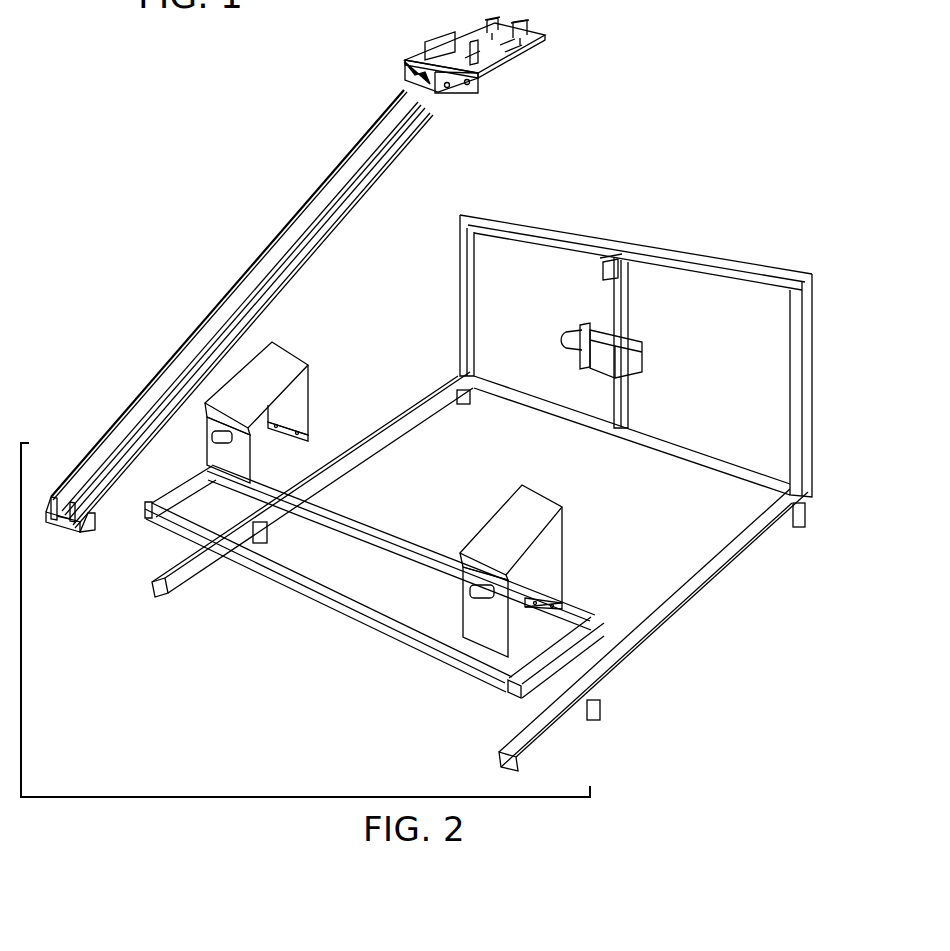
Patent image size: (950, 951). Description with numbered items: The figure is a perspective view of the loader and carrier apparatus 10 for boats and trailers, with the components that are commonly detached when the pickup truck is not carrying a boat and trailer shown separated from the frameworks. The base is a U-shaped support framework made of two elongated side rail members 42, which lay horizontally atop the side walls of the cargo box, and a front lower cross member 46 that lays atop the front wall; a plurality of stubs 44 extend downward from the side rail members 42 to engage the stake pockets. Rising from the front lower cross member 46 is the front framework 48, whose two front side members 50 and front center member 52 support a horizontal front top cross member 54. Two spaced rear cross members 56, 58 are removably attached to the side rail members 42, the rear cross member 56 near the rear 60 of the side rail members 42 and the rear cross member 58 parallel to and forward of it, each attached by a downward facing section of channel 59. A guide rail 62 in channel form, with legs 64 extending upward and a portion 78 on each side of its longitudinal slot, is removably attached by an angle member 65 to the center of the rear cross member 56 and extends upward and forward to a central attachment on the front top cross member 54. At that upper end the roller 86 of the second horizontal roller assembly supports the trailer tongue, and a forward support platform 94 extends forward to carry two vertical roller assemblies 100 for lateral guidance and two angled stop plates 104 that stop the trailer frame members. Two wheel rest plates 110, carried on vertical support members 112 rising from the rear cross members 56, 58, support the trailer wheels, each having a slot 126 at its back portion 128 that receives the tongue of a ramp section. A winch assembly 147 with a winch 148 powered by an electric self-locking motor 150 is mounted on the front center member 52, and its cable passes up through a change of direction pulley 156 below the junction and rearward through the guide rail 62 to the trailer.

The loader and carrier apparatus 10 is at (706, 633).
The side rail members 42 is at (415, 412).
The stubs 44 is at (470, 398).
The front lower cross member 46 is at (700, 452).
The front framework 48 is at (636, 356).
The front side members 50 is at (470, 312).
The front center member 52 is at (624, 405).
The front top cross member 54 is at (608, 243).
The rear cross member 56 is at (296, 582).
The rear cross member 58 is at (398, 530).
The section of channel 59 is at (195, 496).
The rear of side rail members 60 is at (185, 587).
The guide rail 62 is at (268, 248).
The legs 64 is at (298, 220).
The angle member 65 is at (93, 533).
The portion of guide rail 78 is at (125, 438).
The roller 86 is at (410, 78).
The forward support platform 94 is at (540, 43).
The vertical roller assemblies 100 is at (488, 18).
The angled stop plates 104 is at (435, 42).
The wheel rest plates 110 is at (285, 360).
The vertical support members 112 is at (300, 408).
The slot 126 is at (212, 438).
The back portion of wheel rest plate 128 is at (252, 455).
The winch assembly 147 is at (654, 350).
The winch 148 is at (615, 340).
The electric self-locking motor 150 is at (566, 340).
The change of direction pulley 156 is at (604, 272).